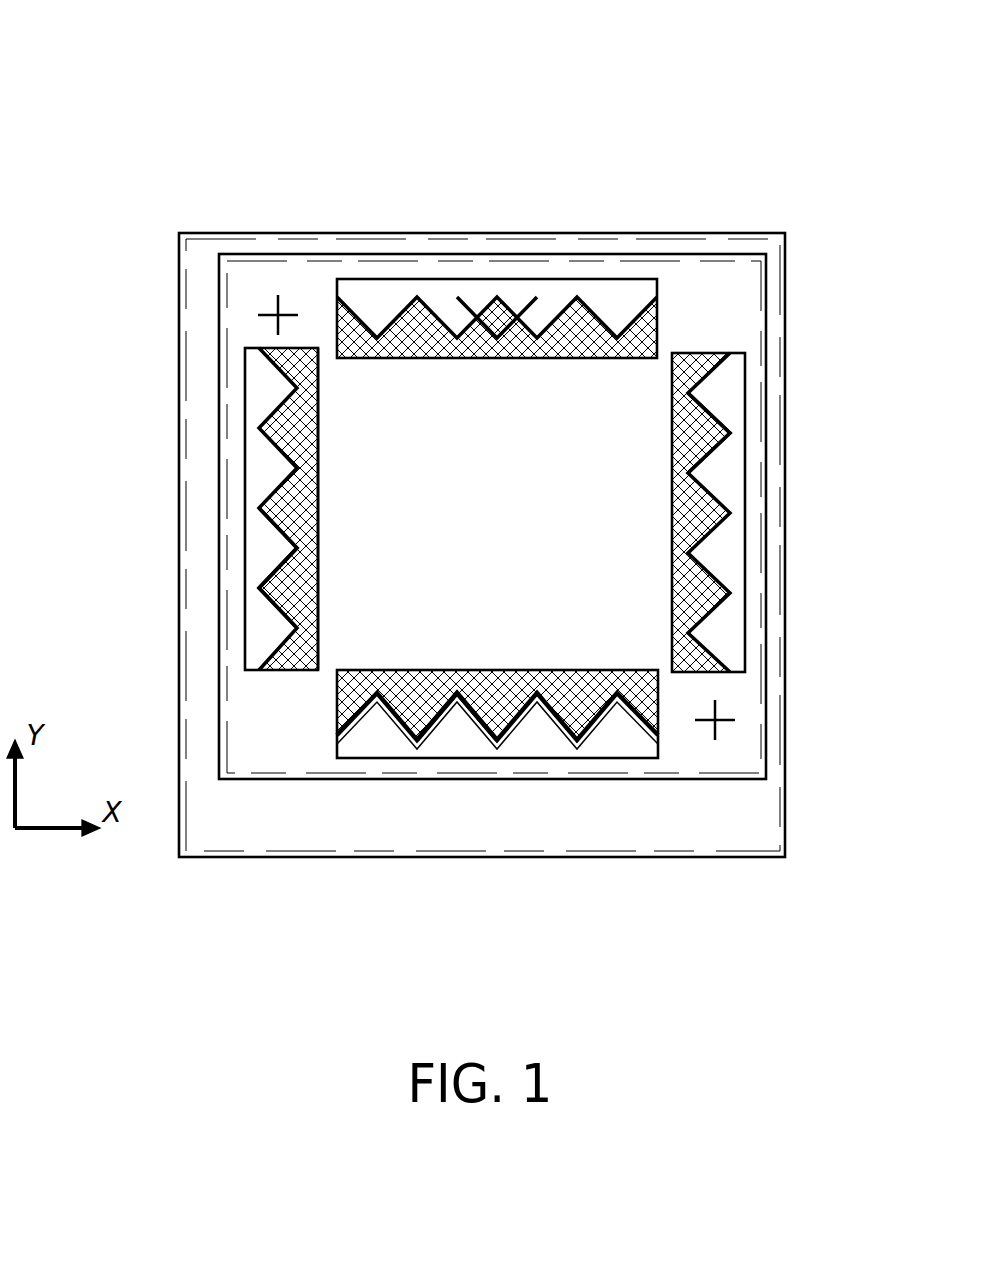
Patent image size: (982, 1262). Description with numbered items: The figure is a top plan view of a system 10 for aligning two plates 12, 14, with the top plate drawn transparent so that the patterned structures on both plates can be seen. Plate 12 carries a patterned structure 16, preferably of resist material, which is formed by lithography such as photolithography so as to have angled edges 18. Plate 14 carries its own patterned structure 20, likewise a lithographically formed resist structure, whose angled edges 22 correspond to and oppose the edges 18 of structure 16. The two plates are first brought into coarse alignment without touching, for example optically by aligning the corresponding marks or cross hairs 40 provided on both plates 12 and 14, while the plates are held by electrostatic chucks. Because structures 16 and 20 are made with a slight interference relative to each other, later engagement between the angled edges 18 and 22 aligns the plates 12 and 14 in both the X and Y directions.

The system for aligning plates 10 is at (145, 133).
The plate 12 is at (763, 256).
The plate 14 is at (702, 235).
The patterned structure 16 is at (447, 285).
The angled edges 18 is at (277, 537).
The patterned structure 20 is at (672, 420).
The angled edges 22 is at (317, 528).
The cross hairs 40 is at (270, 310).